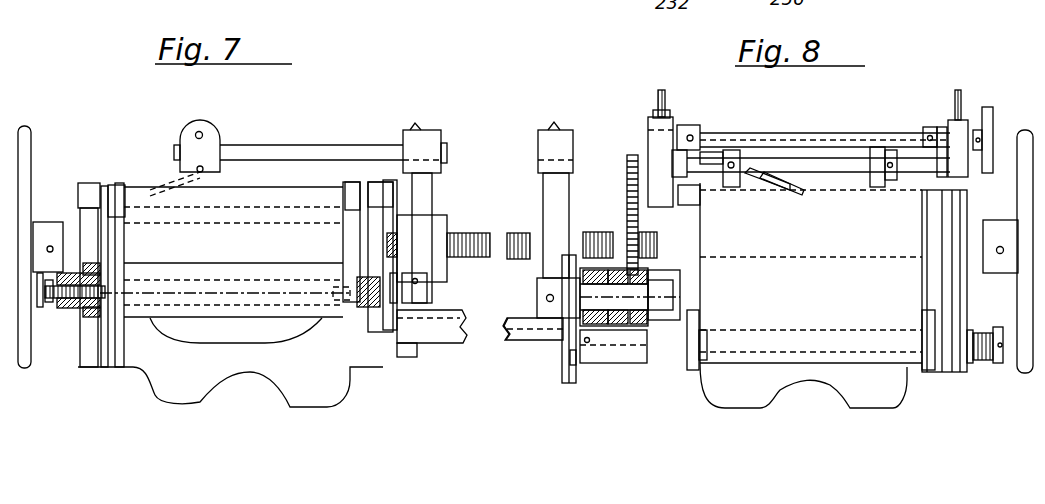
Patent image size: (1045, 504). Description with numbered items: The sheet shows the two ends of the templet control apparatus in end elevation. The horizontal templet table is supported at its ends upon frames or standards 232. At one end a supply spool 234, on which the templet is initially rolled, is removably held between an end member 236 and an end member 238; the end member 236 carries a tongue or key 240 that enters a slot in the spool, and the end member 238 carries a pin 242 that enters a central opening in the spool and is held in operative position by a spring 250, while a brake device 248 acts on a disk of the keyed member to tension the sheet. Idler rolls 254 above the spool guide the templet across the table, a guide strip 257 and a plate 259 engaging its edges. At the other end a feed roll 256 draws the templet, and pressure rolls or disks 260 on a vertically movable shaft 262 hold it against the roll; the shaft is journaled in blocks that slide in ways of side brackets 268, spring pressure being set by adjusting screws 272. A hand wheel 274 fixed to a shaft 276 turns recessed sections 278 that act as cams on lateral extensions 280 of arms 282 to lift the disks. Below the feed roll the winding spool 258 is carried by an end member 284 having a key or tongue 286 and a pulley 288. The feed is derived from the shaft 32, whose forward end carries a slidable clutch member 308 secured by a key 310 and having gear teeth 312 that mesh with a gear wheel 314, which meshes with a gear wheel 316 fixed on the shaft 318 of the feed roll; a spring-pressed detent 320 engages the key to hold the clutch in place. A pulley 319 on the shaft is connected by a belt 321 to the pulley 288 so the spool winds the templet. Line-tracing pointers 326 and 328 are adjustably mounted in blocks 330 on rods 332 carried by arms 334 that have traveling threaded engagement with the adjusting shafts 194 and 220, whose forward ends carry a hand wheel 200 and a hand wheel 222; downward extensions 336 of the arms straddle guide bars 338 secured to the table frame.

In FIG. 8, the shaft 32 is at (516, 303).
In FIG. 7, the shaft 194 is at (462, 230).
In FIG. 7, the hand wheel 200 is at (26, 140).
In FIG. 8, the shaft 220 is at (522, 232).
In FIG. 8, the hand wheel 222 is at (1020, 290).
In FIG. 7, the frames or standards 232 is at (243, 374).
In FIG. 8, the frames or standards 232 is at (810, 379).
In FIG. 7, the spool 234 is at (124, 263).
In FIG. 7, the end member 236 is at (348, 280).
In FIG. 7, the end member 238 is at (140, 320).
In FIG. 7, the tongue or key 240 is at (348, 308).
In FIG. 7, the pin 242 is at (118, 293).
In FIG. 7, the brake device 248 is at (428, 300).
In FIG. 7, the spring 250 is at (75, 305).
In FIG. 7, the idler rolls 254 is at (108, 192).
In FIG. 8, the feed roll 256 is at (825, 258).
In FIG. 8, the guide strip 257 is at (697, 195).
In FIG. 8, the spool 258 is at (932, 370).
In FIG. 8, the plate 259 is at (962, 187).
In FIG. 8, the pressure rolls or disks 260 is at (740, 160).
In FIG. 8, the shaft 262 is at (795, 160).
In FIG. 8, the side brackets 268 is at (652, 128).
In FIG. 8, the adjusting screws 272 is at (661, 92).
In FIG. 8, the hand wheel 274 is at (990, 120).
In FIG. 8, the shaft 276 is at (838, 133).
In FIG. 8, the sections 278 is at (688, 154).
In FIG. 8, the lateral extensions 280 is at (689, 126).
In FIG. 8, the arms 282 is at (713, 155).
In FIG. 8, the end member 284 is at (692, 371).
In FIG. 8, the key or tongue 286 is at (704, 350).
In FIG. 8, the pulley 288 is at (566, 384).
In FIG. 8, the clutch member 308 is at (600, 327).
In FIG. 8, the key 310 is at (615, 327).
In FIG. 8, the gear teeth 312 is at (628, 327).
In FIG. 8, the gear wheel 314 is at (612, 228).
In FIG. 8, the gear wheel 316 is at (627, 180).
In FIG. 8, the shaft 318 is at (640, 233).
In FIG. 8, the pulley 319 is at (562, 322).
In FIG. 8, the spring-pressed detent 320 is at (670, 298).
In FIG. 8, the belt 321 is at (572, 362).
In FIG. 8, the line-tracing pointer 326 is at (790, 188).
In FIG. 7, the line-tracing pointer 328 is at (165, 188).
In FIG. 7, the blocks 330 is at (210, 128).
In FIG. 8, the blocks 330 is at (752, 178).
In FIG. 7, the rods 332 is at (297, 146).
In FIG. 7, the arms 334 is at (425, 190).
In FIG. 7, the downward extensions 336 is at (428, 344).
In FIG. 7, the guide bars 338 is at (506, 328).